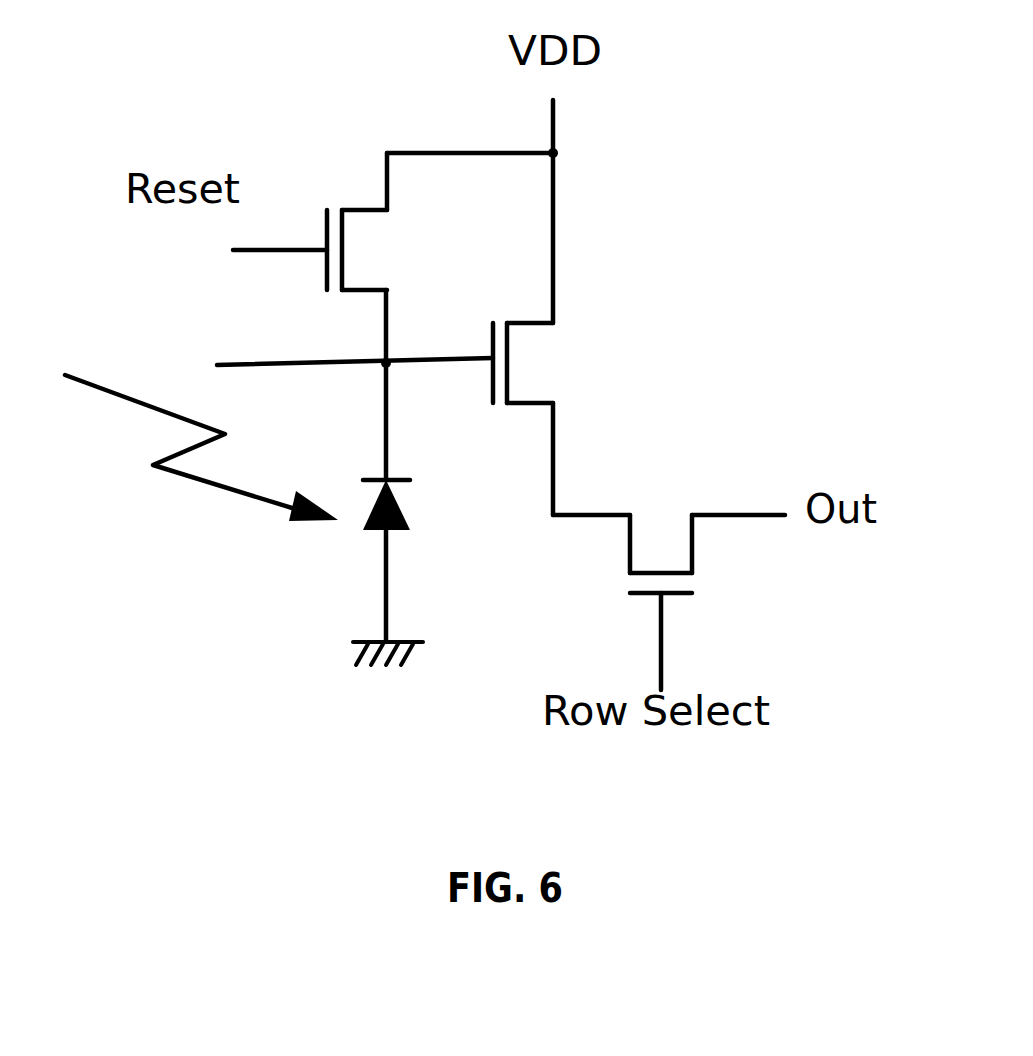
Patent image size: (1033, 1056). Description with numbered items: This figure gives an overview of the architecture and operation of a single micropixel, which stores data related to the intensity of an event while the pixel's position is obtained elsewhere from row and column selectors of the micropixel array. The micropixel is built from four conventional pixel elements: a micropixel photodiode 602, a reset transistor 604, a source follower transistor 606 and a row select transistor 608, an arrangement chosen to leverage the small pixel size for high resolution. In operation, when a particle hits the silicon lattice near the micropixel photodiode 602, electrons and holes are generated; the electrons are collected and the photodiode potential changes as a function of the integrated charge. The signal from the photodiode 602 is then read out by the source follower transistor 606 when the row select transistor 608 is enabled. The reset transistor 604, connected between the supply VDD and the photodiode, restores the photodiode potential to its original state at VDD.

The micropixel photodiode 602 is at (368, 530).
The reset transistor 604 is at (405, 217).
The source follower transistor 606 is at (617, 350).
The row select transistor 608 is at (680, 452).